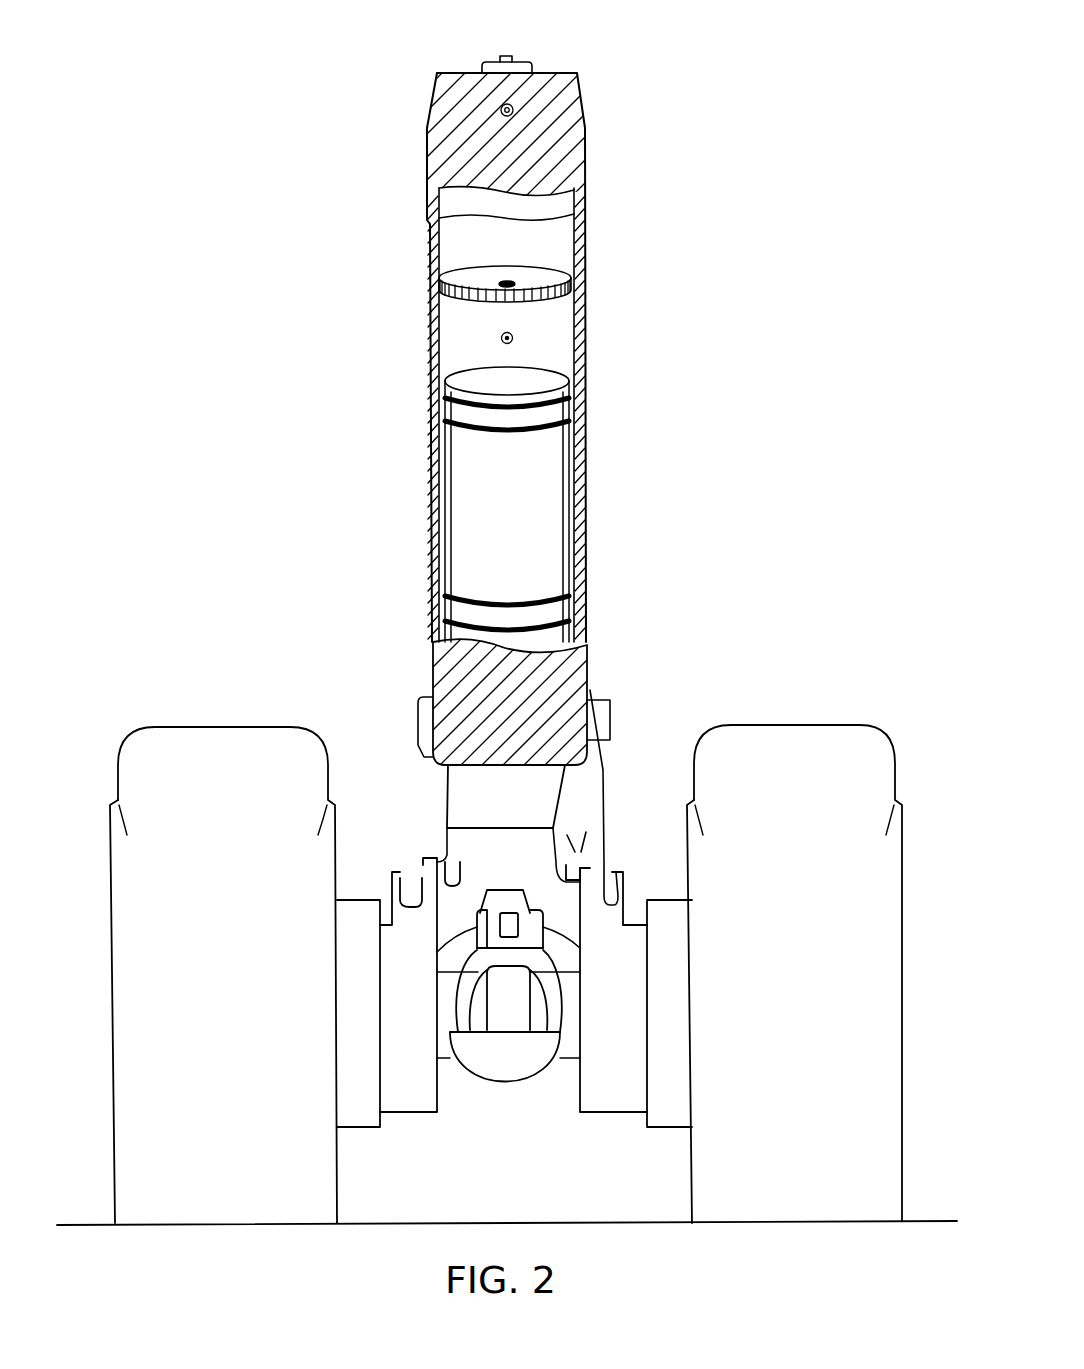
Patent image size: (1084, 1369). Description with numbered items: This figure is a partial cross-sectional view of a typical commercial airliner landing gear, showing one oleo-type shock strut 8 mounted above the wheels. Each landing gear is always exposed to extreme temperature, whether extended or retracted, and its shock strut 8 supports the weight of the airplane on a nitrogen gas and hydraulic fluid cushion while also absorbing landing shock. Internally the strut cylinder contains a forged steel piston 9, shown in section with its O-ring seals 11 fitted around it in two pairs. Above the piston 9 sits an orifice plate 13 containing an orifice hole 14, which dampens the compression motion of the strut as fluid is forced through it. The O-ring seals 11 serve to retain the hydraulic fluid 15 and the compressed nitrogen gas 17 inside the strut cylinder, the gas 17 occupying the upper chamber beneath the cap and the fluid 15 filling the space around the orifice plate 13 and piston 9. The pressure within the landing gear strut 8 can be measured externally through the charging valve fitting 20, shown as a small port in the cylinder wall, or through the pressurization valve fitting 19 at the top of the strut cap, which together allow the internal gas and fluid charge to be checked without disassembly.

The oleo-type shock strut 8 is at (515, 690).
The forged steel piston 9 is at (513, 380).
The O-ring seals 11 is at (522, 428).
The orifice plate 13 is at (470, 276).
The orifice hole 14 is at (508, 282).
The hydraulic fluid 15 is at (450, 345).
The compressed nitrogen gas 17 is at (568, 210).
The pressurization valve fitting 19 is at (508, 56).
The charging valve fitting 20 is at (513, 336).